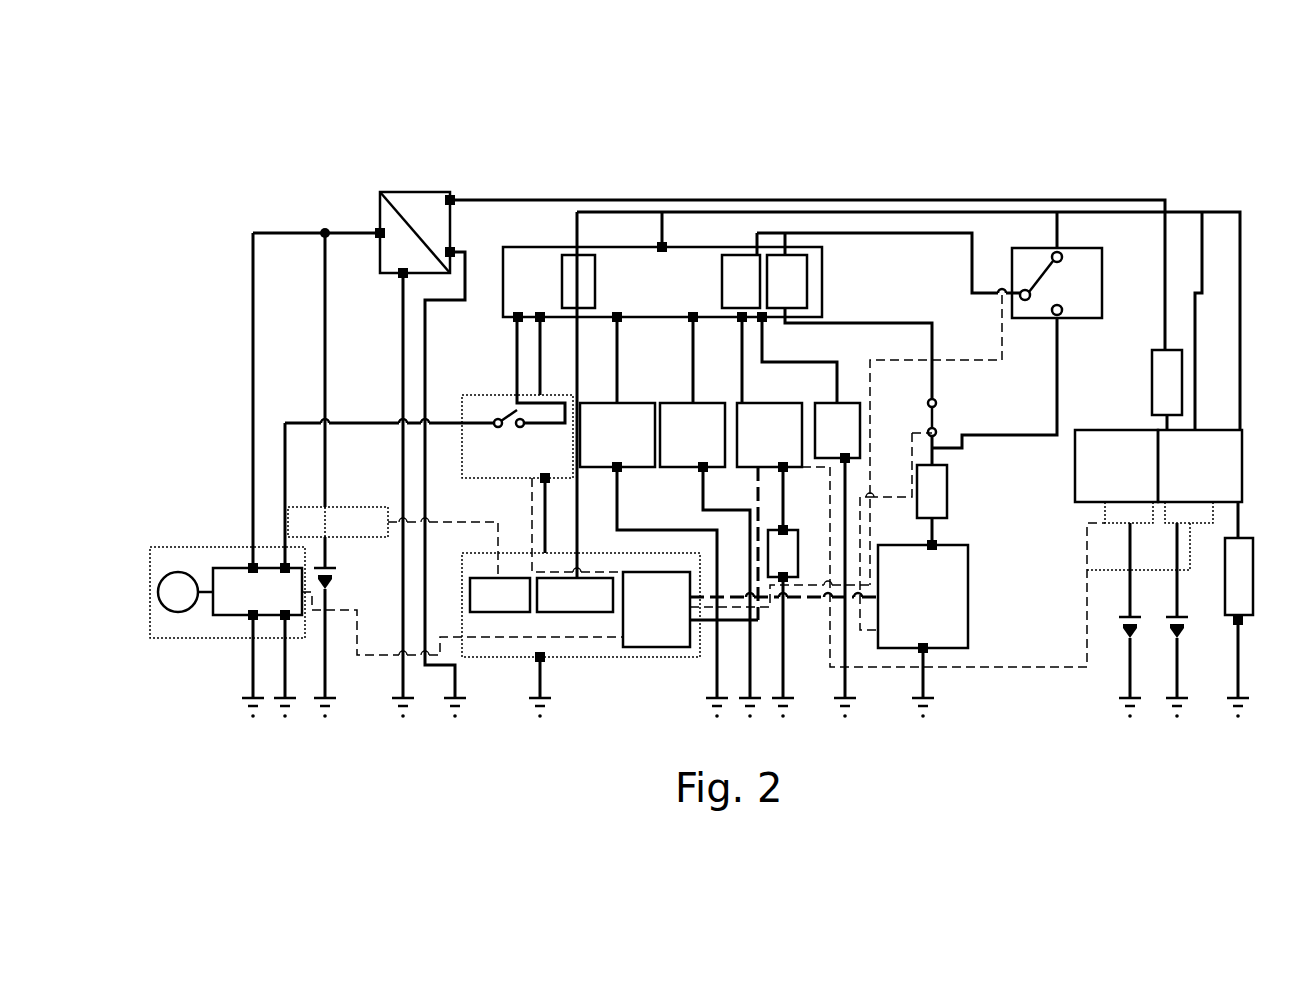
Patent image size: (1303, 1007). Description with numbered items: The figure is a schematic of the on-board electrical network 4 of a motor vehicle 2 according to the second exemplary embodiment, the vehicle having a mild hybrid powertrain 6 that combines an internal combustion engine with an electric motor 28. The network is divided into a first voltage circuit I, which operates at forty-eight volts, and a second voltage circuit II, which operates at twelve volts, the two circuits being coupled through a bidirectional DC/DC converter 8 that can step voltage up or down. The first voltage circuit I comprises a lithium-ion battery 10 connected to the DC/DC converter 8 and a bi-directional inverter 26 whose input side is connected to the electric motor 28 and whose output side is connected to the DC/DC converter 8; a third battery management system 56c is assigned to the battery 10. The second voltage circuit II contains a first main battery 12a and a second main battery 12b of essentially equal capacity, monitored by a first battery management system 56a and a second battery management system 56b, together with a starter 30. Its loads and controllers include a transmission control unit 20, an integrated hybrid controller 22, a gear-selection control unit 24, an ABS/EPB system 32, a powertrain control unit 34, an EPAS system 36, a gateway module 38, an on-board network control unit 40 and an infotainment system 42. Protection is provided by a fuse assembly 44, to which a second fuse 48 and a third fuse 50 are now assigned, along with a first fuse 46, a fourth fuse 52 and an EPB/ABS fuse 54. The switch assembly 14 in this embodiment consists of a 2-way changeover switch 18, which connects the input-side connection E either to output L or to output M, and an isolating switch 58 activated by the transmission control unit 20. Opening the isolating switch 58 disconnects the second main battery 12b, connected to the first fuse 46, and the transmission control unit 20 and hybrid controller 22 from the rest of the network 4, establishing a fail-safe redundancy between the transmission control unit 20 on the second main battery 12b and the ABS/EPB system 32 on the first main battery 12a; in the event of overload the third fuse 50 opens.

The motor vehicle 2 is at (845, 271).
The on-board electrical network 4 is at (1207, 184).
The powertrain 6 is at (190, 524).
The DC/DC converter 8 is at (402, 192).
The battery 10 is at (326, 534).
The first main battery 12a is at (1183, 474).
The second main battery 12b is at (1100, 474).
The switch assembly 14 is at (944, 330).
The 2-way changeover switch 18 is at (1076, 319).
The transmission control unit 20 is at (923, 619).
The integrated hybrid controller 22 is at (895, 582).
The gear-selection control unit 24 is at (826, 444).
The inverter 26 is at (245, 602).
The electric motor 28 is at (180, 612).
The starter 30 is at (1227, 589).
The ABS/EPB system 32 is at (563, 606).
The powertrain control unit 34 is at (645, 621).
The EPAS system 36 is at (605, 444).
The gateway module 38 is at (681, 444).
The on-board network control unit 40 is at (758, 444).
The infotainment system 42 is at (771, 564).
The fuse assembly 44 is at (648, 294).
The first fuse 46 is at (920, 502).
The second fuse 48 is at (729, 294).
The third fuse 50 is at (775, 294).
The fourth fuse 52 is at (1155, 394).
The EPB/ABS fuse 54 is at (566, 294).
The first battery management system 56a is at (1174, 522).
The second battery management system 56b is at (1114, 522).
The third battery management system 56c is at (484, 606).
The isolating switch 58 is at (484, 396).
The first voltage circuit I is at (262, 165).
The second voltage circuit II is at (468, 158).